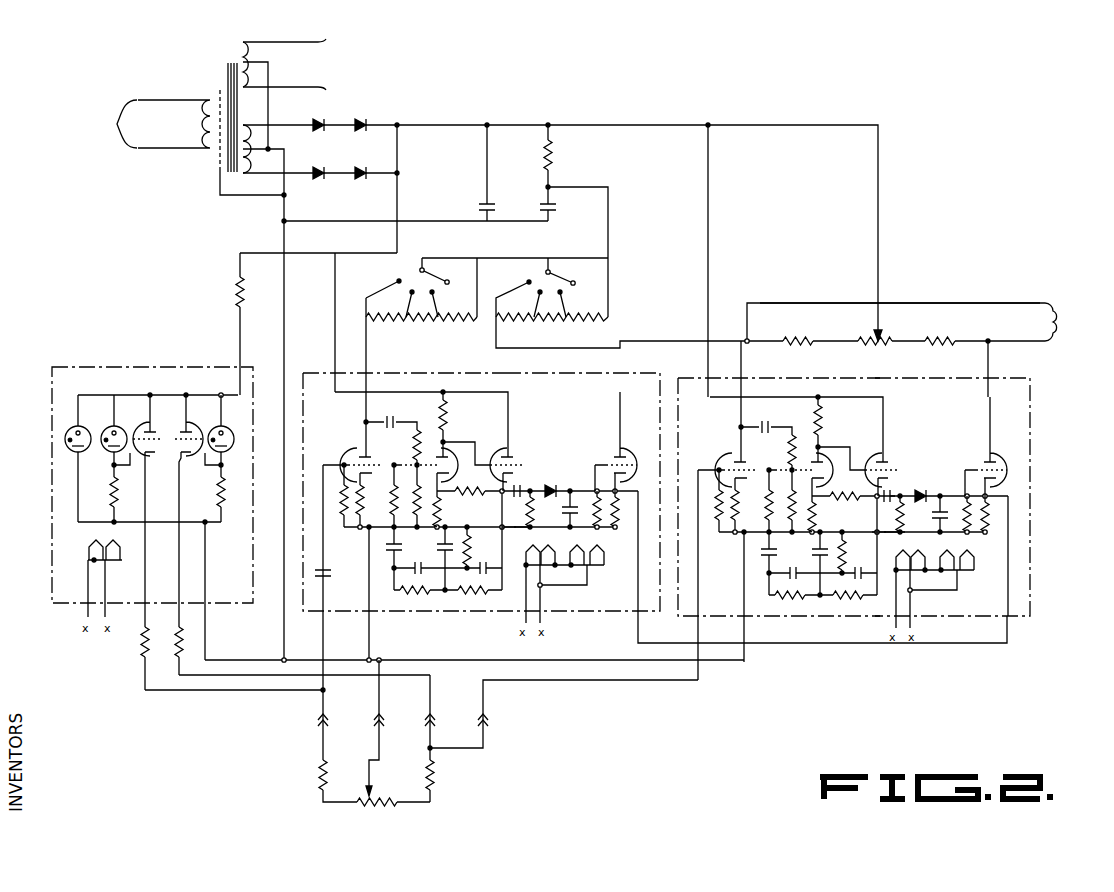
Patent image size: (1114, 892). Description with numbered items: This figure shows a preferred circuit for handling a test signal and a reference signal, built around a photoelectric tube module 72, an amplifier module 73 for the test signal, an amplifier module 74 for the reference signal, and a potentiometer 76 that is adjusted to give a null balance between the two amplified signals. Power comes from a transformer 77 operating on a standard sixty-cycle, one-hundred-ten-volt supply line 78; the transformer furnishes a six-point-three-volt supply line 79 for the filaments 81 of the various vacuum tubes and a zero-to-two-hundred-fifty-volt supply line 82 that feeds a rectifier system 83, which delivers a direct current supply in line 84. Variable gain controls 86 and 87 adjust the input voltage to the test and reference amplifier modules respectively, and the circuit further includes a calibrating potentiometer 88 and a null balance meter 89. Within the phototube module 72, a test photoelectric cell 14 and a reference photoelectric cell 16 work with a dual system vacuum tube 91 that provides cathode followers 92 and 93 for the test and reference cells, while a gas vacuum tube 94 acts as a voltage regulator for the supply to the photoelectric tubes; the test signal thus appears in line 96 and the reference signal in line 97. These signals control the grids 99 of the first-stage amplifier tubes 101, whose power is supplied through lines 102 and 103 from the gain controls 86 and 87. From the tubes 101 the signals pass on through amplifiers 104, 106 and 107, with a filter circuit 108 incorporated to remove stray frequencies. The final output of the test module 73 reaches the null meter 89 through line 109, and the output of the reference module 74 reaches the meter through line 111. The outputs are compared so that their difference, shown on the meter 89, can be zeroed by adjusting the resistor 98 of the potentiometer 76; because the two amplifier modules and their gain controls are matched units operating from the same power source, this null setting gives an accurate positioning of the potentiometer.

The test photoelectric cell 14 is at (121, 414).
The reference photoelectric cell 16 is at (228, 414).
The photoelectric tube module 72 is at (50, 486).
The amplifier module 73 is at (575, 615).
The amplifier module 74 is at (1038, 612).
The potentiometer 76 is at (376, 808).
The transformer 77 is at (212, 160).
The supply line 78 is at (147, 124).
The supply line 79 is at (320, 44).
The filaments 81 is at (90, 541).
The supply line 82 is at (299, 133).
The rectifier system 83 is at (349, 133).
The line 84 is at (398, 160).
The variable gain control 86 is at (461, 258).
The variable gain control 87 is at (592, 258).
The calibrating potentiometer 88 is at (882, 338).
The null balance meter 89 is at (1070, 344).
The dual system vacuum tube 91 is at (179, 428).
The cathode follower 92 is at (147, 454).
The cathode follower 93 is at (184, 462).
The gas vacuum tube 94 is at (66, 435).
The line 96 is at (147, 591).
The line 97 is at (180, 592).
The resistor 98 is at (372, 792).
The grid 99 is at (380, 469).
The amplifier tube 101 is at (353, 458).
The line 102 is at (369, 361).
The line 103 is at (500, 345).
The amplifier 104 is at (455, 472).
The amplifier 106 is at (519, 461).
The amplifier 107 is at (606, 463).
The filter circuit 108 is at (504, 529).
The line 109 is at (992, 302).
The line 111 is at (1007, 347).